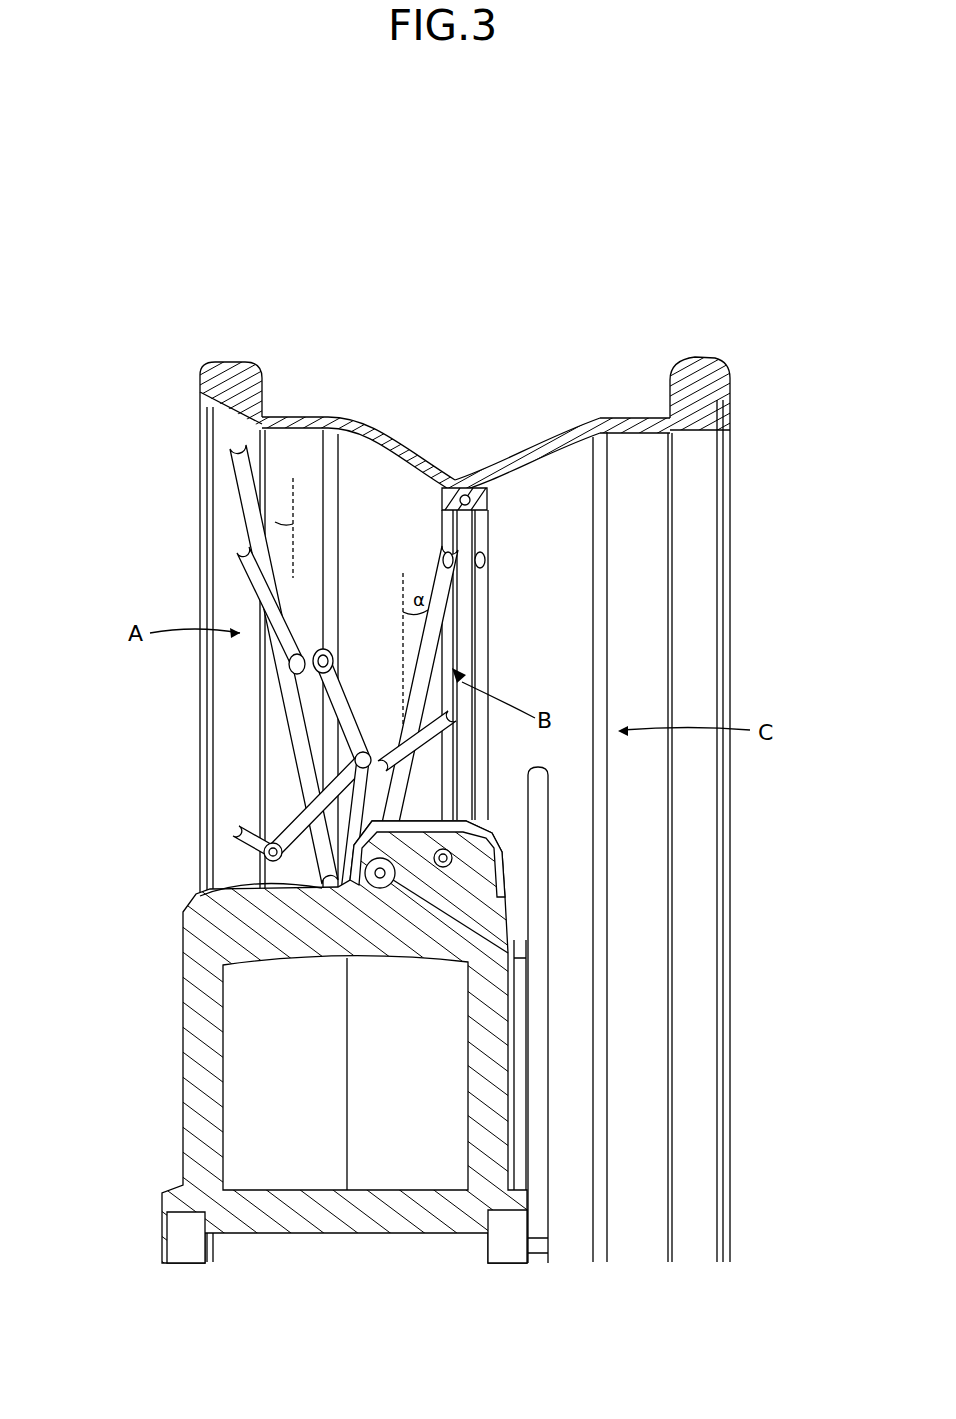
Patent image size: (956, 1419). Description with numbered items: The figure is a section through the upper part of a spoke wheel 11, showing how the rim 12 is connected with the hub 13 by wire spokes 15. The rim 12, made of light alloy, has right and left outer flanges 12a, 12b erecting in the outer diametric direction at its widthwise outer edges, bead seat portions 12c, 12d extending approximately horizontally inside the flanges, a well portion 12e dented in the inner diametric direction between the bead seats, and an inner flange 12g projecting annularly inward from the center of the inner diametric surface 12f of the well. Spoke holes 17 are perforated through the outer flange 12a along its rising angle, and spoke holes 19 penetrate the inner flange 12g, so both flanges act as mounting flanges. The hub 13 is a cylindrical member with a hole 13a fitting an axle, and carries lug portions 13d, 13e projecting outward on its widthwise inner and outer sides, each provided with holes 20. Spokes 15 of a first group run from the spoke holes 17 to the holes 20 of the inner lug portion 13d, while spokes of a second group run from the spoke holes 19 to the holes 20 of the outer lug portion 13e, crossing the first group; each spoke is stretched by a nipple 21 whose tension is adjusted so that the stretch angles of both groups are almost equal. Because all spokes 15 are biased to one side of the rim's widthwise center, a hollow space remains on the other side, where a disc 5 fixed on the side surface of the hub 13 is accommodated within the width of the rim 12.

The spoke wheel 11 is at (335, 250).
The rim 12 is at (735, 333).
The outer flange 12a is at (225, 352).
The outer flange 12b is at (700, 368).
The bead seat portion 12c is at (300, 412).
The bead seat portion 12d is at (645, 415).
The well portion 12e is at (510, 465).
The inner diametric surface 12f is at (505, 487).
The inner flange 12g is at (488, 597).
The hub 13 is at (160, 925).
The hole 13a is at (240, 1232).
The lug portion 13d is at (470, 847).
The lug portion 13e is at (245, 882).
The wire spoke 15 is at (250, 568).
The spoke hole 17 is at (240, 455).
The spoke hole 19 is at (447, 550).
The hole 20 is at (455, 870).
The nipple 21 is at (375, 882).
The disc 5 is at (540, 790).